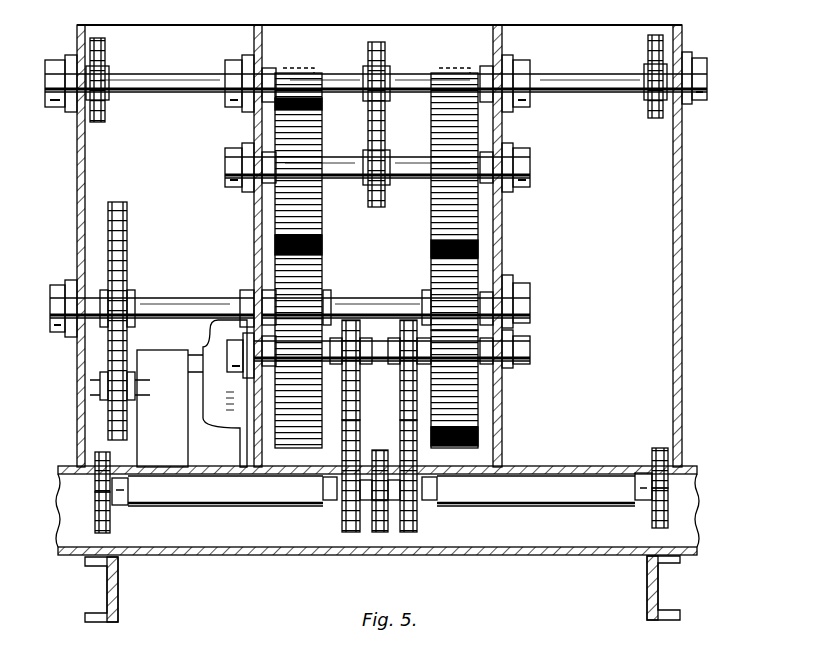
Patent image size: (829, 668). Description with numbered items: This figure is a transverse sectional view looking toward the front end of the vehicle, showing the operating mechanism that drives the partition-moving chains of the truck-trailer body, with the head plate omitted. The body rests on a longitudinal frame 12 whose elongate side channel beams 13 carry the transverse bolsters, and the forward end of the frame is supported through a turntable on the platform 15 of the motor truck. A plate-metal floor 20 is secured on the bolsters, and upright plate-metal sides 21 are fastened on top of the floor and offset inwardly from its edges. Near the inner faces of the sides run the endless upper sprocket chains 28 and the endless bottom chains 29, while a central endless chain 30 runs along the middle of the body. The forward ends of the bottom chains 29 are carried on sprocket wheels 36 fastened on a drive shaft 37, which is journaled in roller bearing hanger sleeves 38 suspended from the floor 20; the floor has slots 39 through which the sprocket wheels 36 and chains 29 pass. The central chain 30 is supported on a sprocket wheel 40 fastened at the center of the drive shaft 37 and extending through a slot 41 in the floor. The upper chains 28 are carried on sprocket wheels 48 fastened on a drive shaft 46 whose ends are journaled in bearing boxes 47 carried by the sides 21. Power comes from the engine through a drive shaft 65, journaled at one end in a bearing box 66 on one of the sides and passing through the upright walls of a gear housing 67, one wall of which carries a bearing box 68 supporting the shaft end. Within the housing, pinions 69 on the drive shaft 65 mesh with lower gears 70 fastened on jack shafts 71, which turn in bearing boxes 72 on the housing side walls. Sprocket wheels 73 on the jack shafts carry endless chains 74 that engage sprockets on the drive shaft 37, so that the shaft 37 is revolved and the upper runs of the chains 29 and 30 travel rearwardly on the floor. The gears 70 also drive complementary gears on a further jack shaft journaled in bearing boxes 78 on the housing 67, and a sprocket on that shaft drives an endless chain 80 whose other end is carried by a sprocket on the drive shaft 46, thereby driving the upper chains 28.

The longitudinal frame 12 is at (118, 576).
The side channel beams 13 is at (658, 572).
The platform 15 is at (342, 505).
The floor 20 is at (568, 466).
The sides 21 is at (682, 236).
The upper sprocket chains 28 is at (106, 120).
The bottom chains 29 is at (95, 522).
The central endless chain 30 is at (386, 532).
The sprocket wheels 36 is at (95, 490).
The drive shaft 37 is at (122, 506).
The roller bearing hanger sleeves 38 is at (556, 498).
The slots 39 is at (640, 464).
The sprocket wheel 40 is at (378, 450).
The slot 41 is at (417, 470).
The drive shaft 46 is at (580, 74).
The bearing boxes 47 is at (692, 55).
The sprocket wheels 48 is at (648, 45).
The drive shaft 65 is at (180, 298).
The bearing box 66 is at (66, 282).
The gear housing 67 is at (502, 208).
The bearing box 68 is at (530, 285).
The pinions 69 is at (431, 265).
The lower gears 70 is at (470, 420).
The jack shafts 71 is at (530, 350).
The bearing boxes 72 is at (530, 338).
The sprocket wheels 73 is at (368, 310).
The endless chains 74 is at (359, 386).
The bearing boxes 78 is at (530, 158).
The endless chain 80 is at (368, 130).